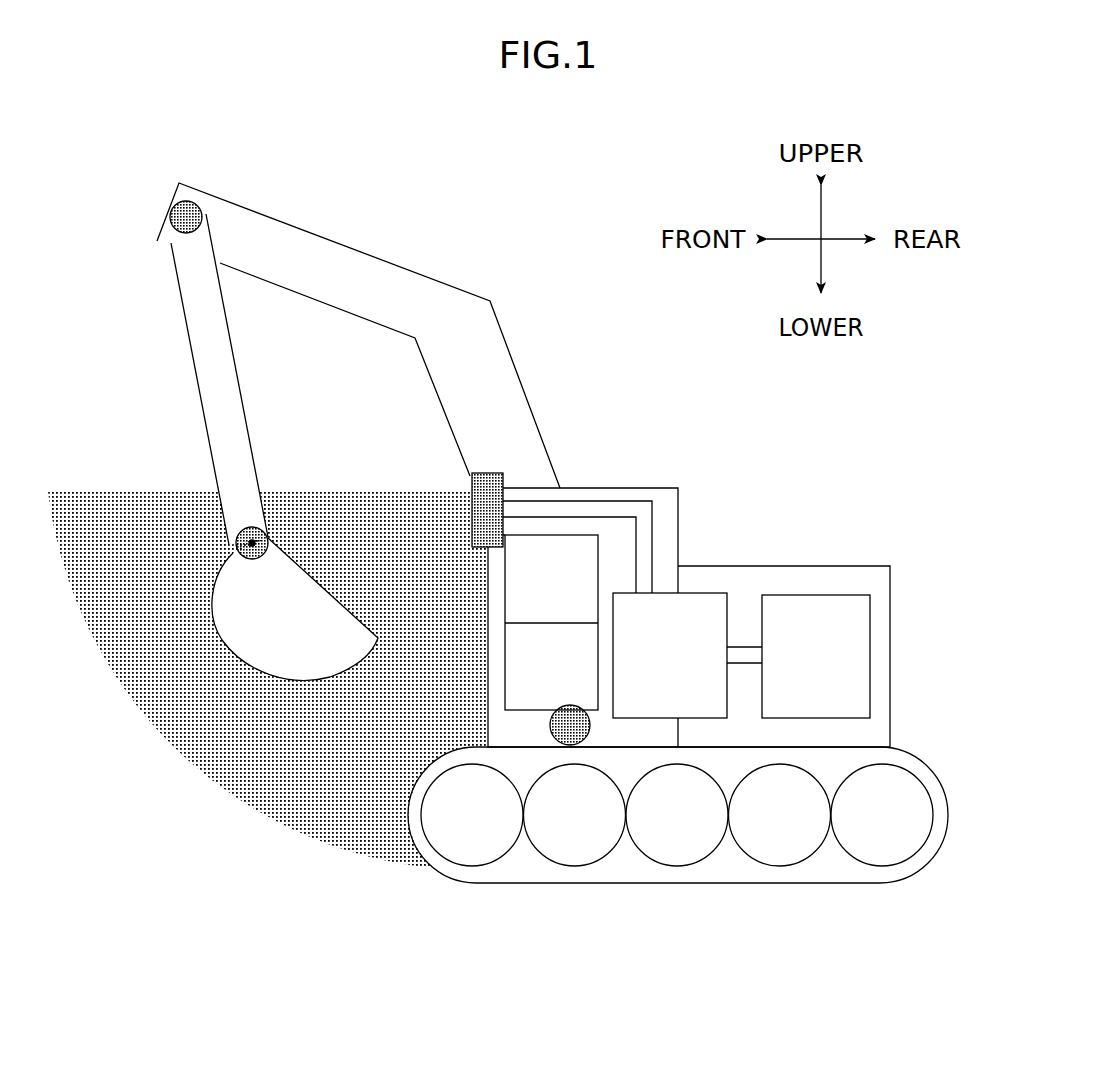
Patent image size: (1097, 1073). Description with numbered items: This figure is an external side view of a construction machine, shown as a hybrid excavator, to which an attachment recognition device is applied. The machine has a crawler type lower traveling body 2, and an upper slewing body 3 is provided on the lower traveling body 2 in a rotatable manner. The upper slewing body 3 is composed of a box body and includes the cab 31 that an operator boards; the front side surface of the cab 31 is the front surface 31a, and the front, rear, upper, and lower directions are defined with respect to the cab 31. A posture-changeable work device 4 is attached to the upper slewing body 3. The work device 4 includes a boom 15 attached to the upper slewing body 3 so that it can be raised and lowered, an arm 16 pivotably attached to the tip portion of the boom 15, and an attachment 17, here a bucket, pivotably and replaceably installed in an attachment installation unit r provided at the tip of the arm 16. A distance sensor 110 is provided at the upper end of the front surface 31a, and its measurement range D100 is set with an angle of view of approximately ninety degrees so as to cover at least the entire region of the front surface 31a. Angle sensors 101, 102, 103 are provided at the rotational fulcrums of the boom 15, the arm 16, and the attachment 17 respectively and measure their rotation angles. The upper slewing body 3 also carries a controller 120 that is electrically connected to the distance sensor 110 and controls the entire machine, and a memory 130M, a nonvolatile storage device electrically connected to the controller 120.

The lower traveling body 2 is at (936, 742).
The upper slewing body 3 is at (721, 718).
The work device 4 is at (325, 431).
The boom 15 is at (490, 333).
The arm 16 is at (225, 362).
The attachment 17 is at (248, 637).
The cab 31 is at (668, 493).
The front surface 31a is at (488, 592).
The angle sensor 101 is at (570, 745).
The angle sensor 102 is at (187, 200).
The angle sensor 103 is at (253, 527).
The distance sensor 110 is at (492, 473).
The controller 120 is at (693, 593).
The memory 130M is at (808, 595).
The measurement range D100 is at (127, 497).
The attachment installation unit r is at (267, 528).